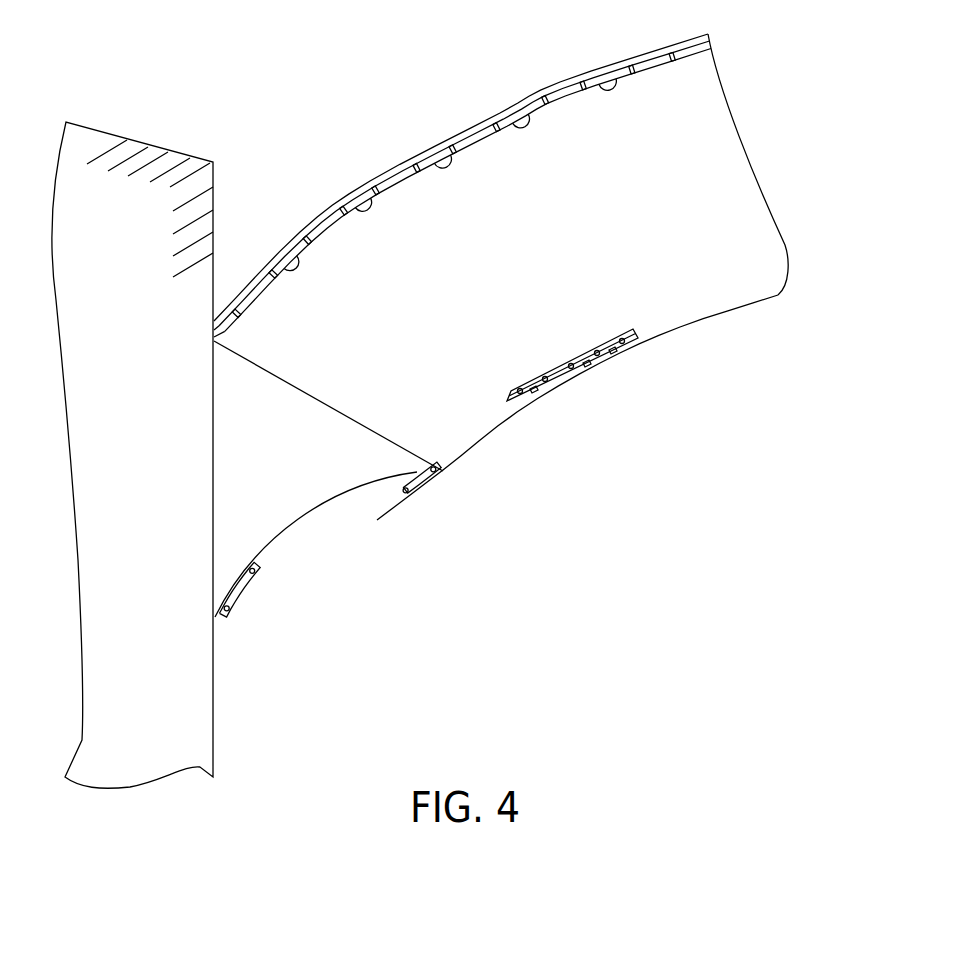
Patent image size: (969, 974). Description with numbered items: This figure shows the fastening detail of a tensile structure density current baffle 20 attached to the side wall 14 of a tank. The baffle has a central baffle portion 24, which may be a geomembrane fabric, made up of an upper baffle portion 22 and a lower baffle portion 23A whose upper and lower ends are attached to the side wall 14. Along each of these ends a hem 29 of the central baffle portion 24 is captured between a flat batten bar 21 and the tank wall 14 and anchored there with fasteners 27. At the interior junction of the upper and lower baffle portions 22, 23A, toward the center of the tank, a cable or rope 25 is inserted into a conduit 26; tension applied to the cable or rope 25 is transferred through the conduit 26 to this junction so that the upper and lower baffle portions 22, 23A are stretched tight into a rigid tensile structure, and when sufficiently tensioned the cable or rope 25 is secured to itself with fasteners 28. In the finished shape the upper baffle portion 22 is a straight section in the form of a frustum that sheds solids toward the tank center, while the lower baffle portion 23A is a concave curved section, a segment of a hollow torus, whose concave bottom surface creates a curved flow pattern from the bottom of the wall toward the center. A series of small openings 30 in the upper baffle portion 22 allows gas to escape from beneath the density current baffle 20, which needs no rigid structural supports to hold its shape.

The side wall 14 is at (212, 478).
The density current baffle 20 is at (805, 215).
The flat batten bar 21 is at (447, 147).
The upper baffle portion 22 is at (325, 402).
The lower baffle portion 23A is at (303, 515).
The central baffle portion 24 is at (463, 457).
The cable or rope 25 is at (540, 397).
The conduit 26 is at (516, 414).
The fasteners 27 is at (413, 163).
The fasteners 28 is at (593, 368).
The hem 29 is at (475, 123).
The small openings 30 is at (353, 210).